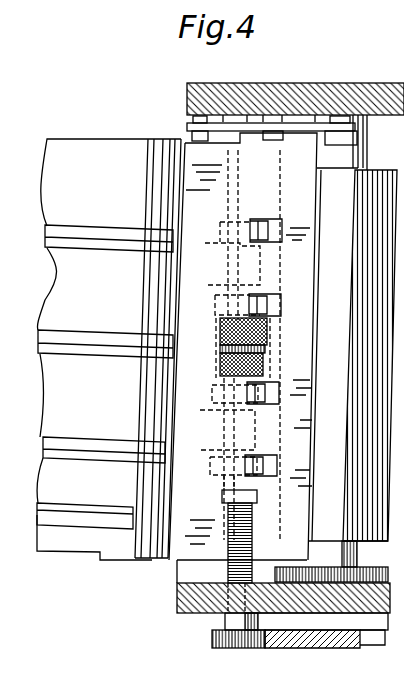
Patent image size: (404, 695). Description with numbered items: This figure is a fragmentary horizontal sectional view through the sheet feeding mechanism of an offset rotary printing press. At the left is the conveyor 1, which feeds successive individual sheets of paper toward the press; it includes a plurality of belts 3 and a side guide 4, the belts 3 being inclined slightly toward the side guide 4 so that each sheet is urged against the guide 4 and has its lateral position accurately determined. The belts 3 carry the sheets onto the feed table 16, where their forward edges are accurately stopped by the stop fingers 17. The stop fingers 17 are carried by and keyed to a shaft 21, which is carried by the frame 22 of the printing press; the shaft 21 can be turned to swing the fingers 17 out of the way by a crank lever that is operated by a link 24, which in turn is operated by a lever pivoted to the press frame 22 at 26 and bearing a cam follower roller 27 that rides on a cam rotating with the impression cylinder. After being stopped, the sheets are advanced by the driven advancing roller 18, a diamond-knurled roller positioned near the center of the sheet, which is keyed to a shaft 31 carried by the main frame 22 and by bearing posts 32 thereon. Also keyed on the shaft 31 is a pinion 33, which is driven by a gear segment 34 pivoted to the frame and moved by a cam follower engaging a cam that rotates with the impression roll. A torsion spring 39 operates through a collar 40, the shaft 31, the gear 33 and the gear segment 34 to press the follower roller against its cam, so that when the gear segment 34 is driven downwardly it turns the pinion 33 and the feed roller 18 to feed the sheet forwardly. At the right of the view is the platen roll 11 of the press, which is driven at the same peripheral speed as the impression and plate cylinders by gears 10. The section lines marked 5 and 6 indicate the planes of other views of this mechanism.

The conveyor 1 is at (68, 130).
The belts 3 is at (63, 248).
The side guide 4 is at (50, 509).
The section line 5 is at (200, 57).
The section line 6 is at (65, 403).
The gears 10 is at (370, 572).
The platen roll 11 is at (384, 173).
The feed table 16 is at (177, 551).
The stop fingers 17 is at (258, 223).
The advancing roller 18 is at (220, 332).
The shaft 21 is at (229, 184).
The frame 22 is at (346, 101).
The link 24 is at (192, 134).
The pivot 26 is at (275, 139).
The cam follower roller 27 is at (333, 144).
The shaft 31 is at (222, 491).
The bearing posts 32 is at (262, 255).
The pinion 33 is at (236, 648).
The gear segment 34 is at (297, 648).
The torsion spring 39 is at (228, 568).
The collar 40 is at (222, 503).